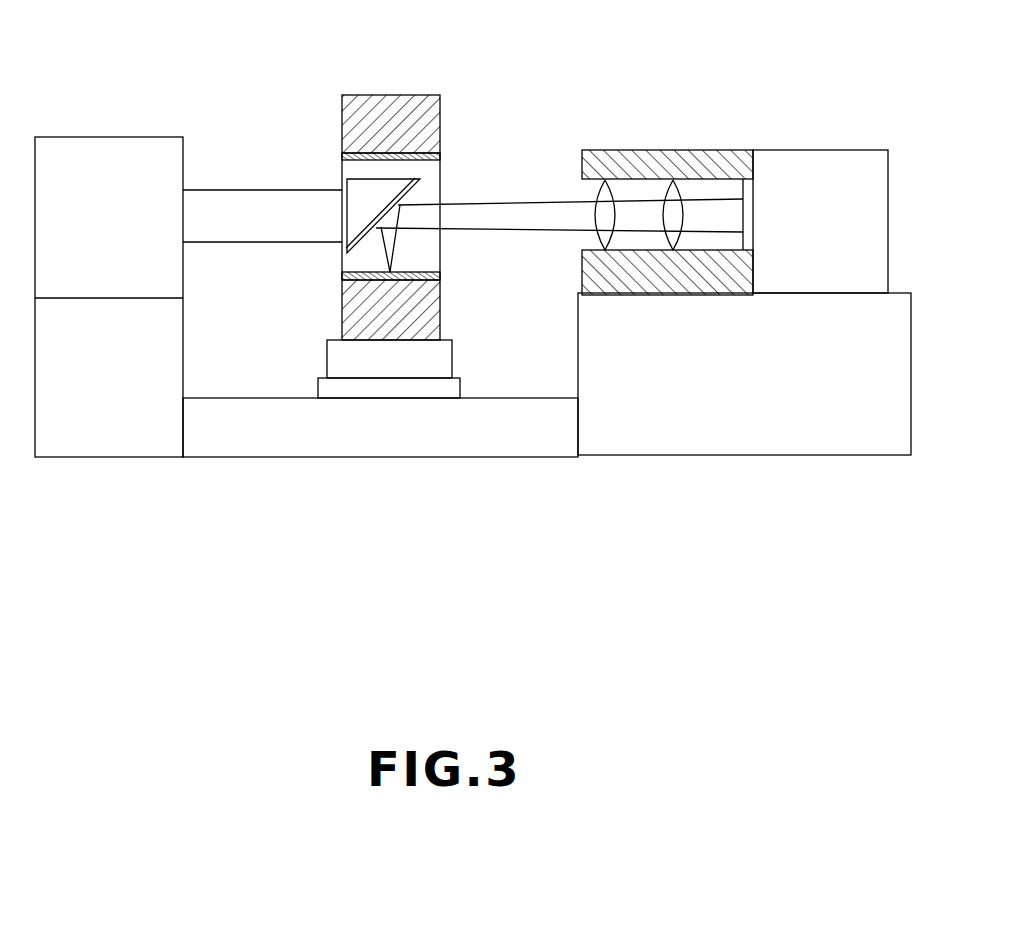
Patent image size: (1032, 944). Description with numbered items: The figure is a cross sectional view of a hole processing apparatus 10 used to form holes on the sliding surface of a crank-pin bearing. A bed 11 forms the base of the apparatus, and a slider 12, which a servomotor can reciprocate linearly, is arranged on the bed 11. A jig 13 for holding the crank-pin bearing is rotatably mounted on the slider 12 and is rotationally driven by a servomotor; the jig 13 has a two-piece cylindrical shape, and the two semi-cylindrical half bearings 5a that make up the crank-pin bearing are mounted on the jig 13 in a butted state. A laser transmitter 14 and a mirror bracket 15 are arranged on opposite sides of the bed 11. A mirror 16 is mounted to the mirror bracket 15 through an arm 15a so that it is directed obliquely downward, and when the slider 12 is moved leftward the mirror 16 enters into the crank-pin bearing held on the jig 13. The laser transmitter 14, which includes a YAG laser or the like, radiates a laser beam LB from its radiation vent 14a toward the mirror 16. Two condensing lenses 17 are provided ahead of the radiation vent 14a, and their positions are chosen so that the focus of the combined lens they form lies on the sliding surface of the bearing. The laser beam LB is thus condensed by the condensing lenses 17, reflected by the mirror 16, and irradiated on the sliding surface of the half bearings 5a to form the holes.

The hole processing apparatus 10 is at (473, 308).
The bed 11 is at (268, 456).
The slider 12 is at (452, 362).
The jig 13 is at (441, 113).
The half bearing 5a is at (341, 156).
The laser transmitter 14 is at (819, 133).
The radiation vent 14a is at (727, 297).
The mirror bracket 15 is at (96, 125).
The arm 15a is at (238, 198).
The mirror 16 is at (419, 188).
The condensing lens 17 is at (612, 186).
The laser beam LB is at (535, 210).